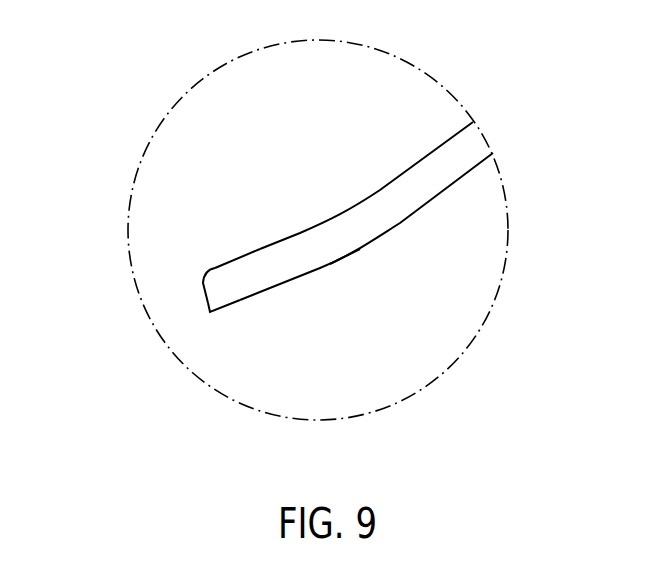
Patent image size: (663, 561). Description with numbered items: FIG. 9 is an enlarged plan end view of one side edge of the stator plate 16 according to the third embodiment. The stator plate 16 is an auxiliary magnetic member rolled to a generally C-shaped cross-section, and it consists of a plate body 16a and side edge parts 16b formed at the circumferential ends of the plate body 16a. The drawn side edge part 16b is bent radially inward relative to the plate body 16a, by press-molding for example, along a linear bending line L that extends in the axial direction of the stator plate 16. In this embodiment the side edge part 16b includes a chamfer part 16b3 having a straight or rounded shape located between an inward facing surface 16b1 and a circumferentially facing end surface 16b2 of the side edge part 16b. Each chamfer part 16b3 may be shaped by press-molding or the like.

The stator plate 16 is at (321, 298).
The plate body 16a is at (442, 173).
The side edge part 16b is at (277, 273).
The inward facing surface 16b1 is at (243, 257).
The circumferentially facing end surface 16b2 is at (207, 303).
The chamfer part 16b3 is at (203, 282).
The linear bending line L is at (345, 257).